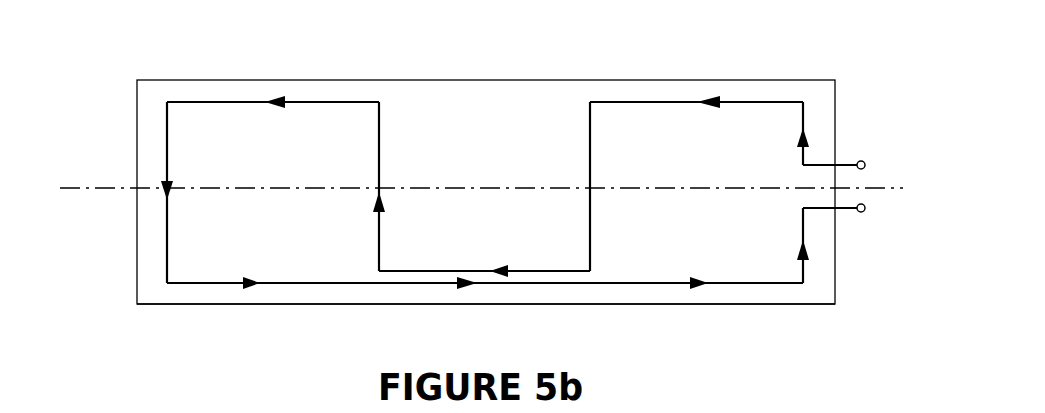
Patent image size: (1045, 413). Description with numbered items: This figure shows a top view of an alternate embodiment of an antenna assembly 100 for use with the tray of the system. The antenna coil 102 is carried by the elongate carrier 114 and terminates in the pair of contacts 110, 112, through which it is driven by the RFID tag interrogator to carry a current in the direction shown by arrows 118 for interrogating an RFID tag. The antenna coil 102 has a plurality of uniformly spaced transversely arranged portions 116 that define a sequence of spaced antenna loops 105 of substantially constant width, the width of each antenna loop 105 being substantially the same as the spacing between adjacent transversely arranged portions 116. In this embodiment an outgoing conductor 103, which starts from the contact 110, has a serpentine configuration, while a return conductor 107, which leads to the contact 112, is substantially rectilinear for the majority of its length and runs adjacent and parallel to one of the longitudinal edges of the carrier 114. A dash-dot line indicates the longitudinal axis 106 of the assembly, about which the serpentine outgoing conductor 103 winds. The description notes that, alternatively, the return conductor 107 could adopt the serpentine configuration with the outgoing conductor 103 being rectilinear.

The conductor arrangement 100 is at (652, 78).
The antenna coil 102 is at (363, 101).
The outgoing conductor 103 is at (606, 100).
The antenna loop 105 is at (229, 128).
The central axis 106 is at (102, 190).
The return conductor 107 is at (348, 284).
The contact 110 is at (858, 160).
The contact 112 is at (866, 208).
The elongate carrier 114 is at (232, 304).
The transversely arranged portion 116 is at (167, 266).
The arrows 118 is at (272, 100).